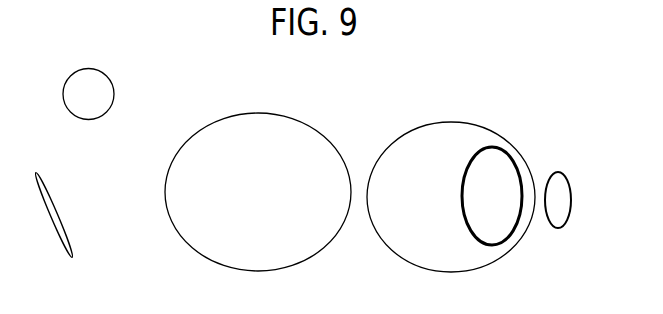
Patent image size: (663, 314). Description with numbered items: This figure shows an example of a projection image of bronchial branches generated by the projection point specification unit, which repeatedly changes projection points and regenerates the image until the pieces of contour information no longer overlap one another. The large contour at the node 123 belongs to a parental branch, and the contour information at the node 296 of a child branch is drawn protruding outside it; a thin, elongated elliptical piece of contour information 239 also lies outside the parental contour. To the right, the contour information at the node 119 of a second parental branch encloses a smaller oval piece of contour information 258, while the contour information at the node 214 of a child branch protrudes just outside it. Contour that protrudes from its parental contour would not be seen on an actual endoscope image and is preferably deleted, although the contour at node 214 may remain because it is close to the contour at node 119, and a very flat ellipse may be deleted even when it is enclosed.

The node 296 is at (106, 94).
The elongated slot 239 is at (61, 229).
The node 123 is at (258, 175).
The node 119 is at (451, 181).
The oval opening 258 is at (472, 196).
The node 214 is at (577, 200).